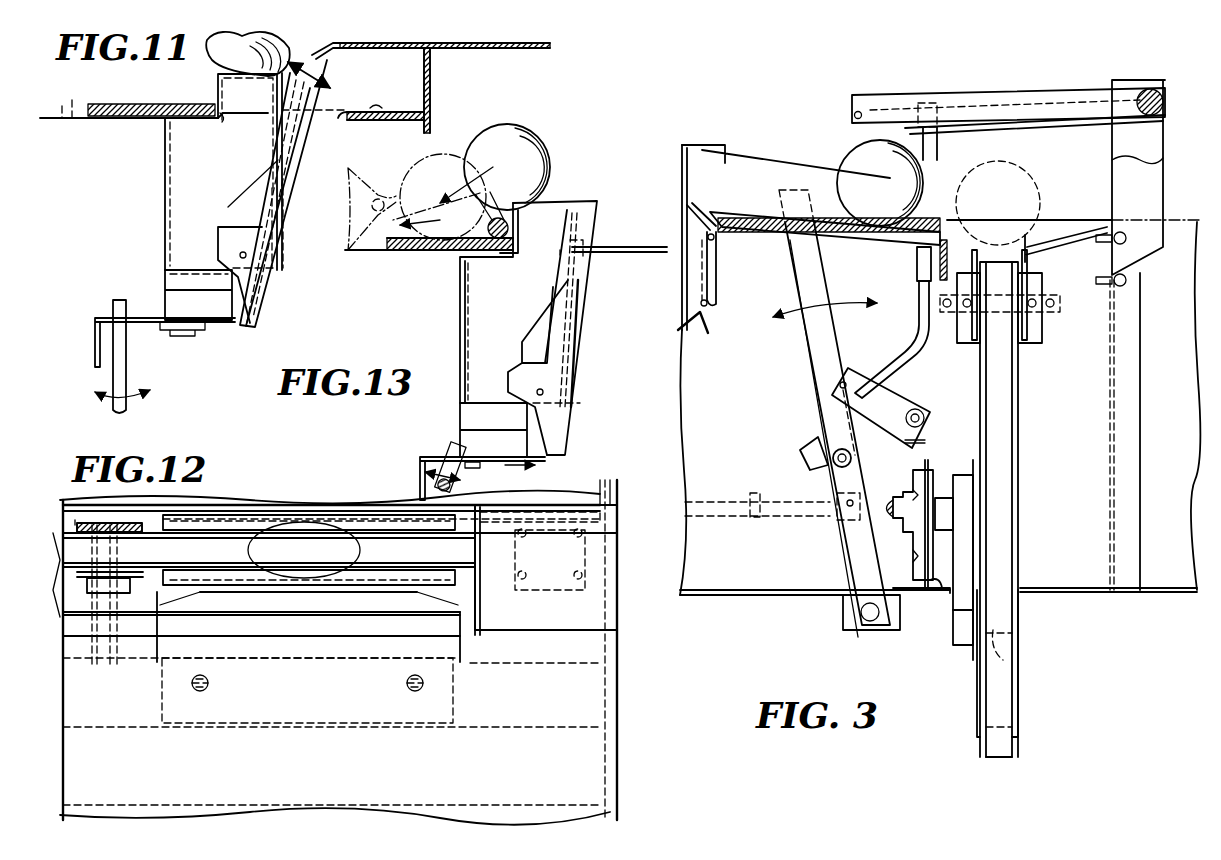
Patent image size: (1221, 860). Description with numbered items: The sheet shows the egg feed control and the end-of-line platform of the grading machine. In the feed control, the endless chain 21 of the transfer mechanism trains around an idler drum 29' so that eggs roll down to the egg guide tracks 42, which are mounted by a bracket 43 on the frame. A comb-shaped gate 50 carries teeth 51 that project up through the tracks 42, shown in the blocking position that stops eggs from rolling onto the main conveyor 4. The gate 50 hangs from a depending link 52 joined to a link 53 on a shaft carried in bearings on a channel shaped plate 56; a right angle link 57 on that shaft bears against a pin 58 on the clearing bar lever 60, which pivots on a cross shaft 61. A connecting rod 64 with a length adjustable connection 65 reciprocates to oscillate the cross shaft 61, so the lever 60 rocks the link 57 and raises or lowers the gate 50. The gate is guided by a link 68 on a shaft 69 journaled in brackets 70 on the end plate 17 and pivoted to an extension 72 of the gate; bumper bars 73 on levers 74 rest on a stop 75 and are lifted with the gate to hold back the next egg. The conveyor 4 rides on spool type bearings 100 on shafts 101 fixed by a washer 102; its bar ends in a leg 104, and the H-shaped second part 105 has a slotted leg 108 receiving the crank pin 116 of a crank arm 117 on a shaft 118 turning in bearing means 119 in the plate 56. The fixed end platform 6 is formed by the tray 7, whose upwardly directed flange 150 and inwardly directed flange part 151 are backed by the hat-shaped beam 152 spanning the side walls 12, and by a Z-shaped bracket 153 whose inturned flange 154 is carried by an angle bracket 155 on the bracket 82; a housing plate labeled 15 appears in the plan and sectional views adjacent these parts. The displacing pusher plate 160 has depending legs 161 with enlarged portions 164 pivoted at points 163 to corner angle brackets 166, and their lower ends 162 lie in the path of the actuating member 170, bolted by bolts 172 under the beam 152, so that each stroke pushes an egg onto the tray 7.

In FIG. 3, the main conveyor 4 is at (1020, 365).
In FIG. 11, the fixed end platform 6 is at (158, 140).
In FIG. 11, the tray 7 is at (66, 118).
In FIG. 3, the side walls of the main housing 12 is at (1175, 590).
In FIG. 13, the table plate 15 is at (546, 49).
In FIG. 12, the table plate 15 is at (600, 756).
In FIG. 3, the end plate 17 is at (1108, 472).
In FIG. 3, the endless chain 21 is at (720, 292).
In FIG. 3, the idler drum 29' is at (777, 327).
In FIG. 3, the egg guide tracks 42 is at (772, 236).
In FIG. 3, the bracket 43 is at (768, 172).
In FIG. 3, the gate 50 is at (916, 264).
In FIG. 3, the teeth 51 is at (975, 160).
In FIG. 3, the depending link 52 is at (914, 322).
In FIG. 3, the link 53 is at (888, 405).
In FIG. 3, the channel shaped plate 56 is at (930, 596).
In FIG. 3, the right angle link 57 is at (812, 440).
In FIG. 3, the pin 58 is at (852, 458).
In FIG. 3, the clearing bar lever 60 is at (812, 372).
In FIG. 3, the cross shaft 61 is at (866, 620).
In FIG. 3, the connecting rod 64 is at (723, 503).
In FIG. 3, the length adjustable connection 65 is at (797, 497).
In FIG. 3, the link 68 is at (1030, 128).
In FIG. 3, the shaft 69 is at (1164, 96).
In FIG. 3, the brackets 70 is at (1160, 140).
In FIG. 3, the extension 72 is at (938, 150).
In FIG. 3, the bumper bars 73 is at (855, 114).
In FIG. 3, the levers 74 is at (898, 95).
In FIG. 3, the bracket or stop 75 is at (905, 140).
In FIG. 13, the bracket 82 is at (420, 66).
In FIG. 12, the spool type bearings 100 is at (140, 582).
In FIG. 12, the shafts 101 is at (115, 600).
In FIG. 12, the washer 102 is at (88, 590).
In FIG. 3, the leg 104 is at (1000, 760).
In FIG. 12, the second part 105 is at (60, 525).
In FIG. 3, the leg 108 is at (1018, 718).
In FIG. 3, the crank pin 116 is at (1008, 658).
In FIG. 3, the crank arm 117 is at (953, 633).
In FIG. 3, the shaft 118 is at (958, 497).
In FIG. 3, the bearing means 119 is at (920, 555).
In FIG. 11, the upwardly directed flange 150 is at (222, 100).
In FIG. 11, the inwardly directed flange part 151 is at (233, 74).
In FIG. 13, the inwardly directed flange part 151 is at (553, 222).
In FIG. 12, the inwardly directed flange part 151 is at (340, 520).
In FIG. 11, the beam 152 is at (168, 175).
In FIG. 11, the bracket 153 is at (230, 118).
In FIG. 13, the inturned flange 154 is at (552, 203).
In FIG. 12, the inturned flange 154 is at (427, 578).
In FIG. 13, the angle bracket 155 is at (396, 112).
In FIG. 12, the angle bracket 155 is at (443, 707).
In FIG. 11, the pusher plate 160 is at (306, 79).
In FIG. 11, the depending legs 161 is at (320, 140).
In FIG. 11, the lower ends 162 is at (258, 300).
In FIG. 11, the pivot points 163 is at (250, 247).
In FIG. 11, the enlargement 164 is at (218, 240).
In FIG. 11, the corner angle brackets 166 is at (228, 207).
In FIG. 11, the actuating member 170 is at (204, 325).
In FIG. 11, the bolts 172 is at (165, 336).